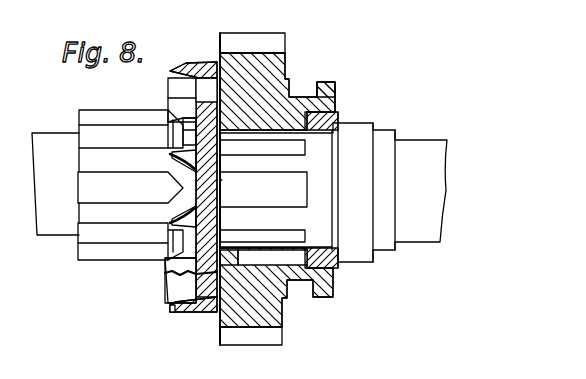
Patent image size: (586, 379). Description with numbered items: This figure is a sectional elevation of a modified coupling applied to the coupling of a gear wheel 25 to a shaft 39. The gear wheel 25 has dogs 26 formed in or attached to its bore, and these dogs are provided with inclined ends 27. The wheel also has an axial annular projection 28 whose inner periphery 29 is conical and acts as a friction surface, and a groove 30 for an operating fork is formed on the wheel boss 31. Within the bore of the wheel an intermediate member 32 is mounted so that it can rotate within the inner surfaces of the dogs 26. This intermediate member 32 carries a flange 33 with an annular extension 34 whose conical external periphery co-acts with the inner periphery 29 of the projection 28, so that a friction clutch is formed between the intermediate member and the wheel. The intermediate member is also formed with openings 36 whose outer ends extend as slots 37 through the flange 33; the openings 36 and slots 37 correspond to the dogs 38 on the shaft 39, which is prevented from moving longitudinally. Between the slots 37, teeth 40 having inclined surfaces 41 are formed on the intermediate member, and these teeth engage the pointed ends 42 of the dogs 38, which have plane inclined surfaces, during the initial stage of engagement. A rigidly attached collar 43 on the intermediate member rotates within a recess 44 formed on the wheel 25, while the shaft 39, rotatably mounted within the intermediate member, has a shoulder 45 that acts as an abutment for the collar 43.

The gear wheel 25 is at (272, 82).
The dogs 26 is at (284, 266).
The inclined ends 27 is at (232, 257).
The axial annular projection 28 is at (194, 65).
The inner periphery 29 is at (193, 77).
The groove 30 is at (322, 90).
The wheel boss 31 is at (337, 105).
The intermediate member 32 is at (262, 191).
The flange 33 is at (193, 287).
The annular extension 34 is at (173, 313).
The openings 36 is at (279, 196).
The slots 37 is at (240, 189).
The dogs 38 is at (92, 252).
The shaft 39 is at (57, 213).
The teeth 40 is at (130, 150).
The inclined surfaces 41 is at (180, 158).
The pointed ends 42 is at (180, 187).
The collar 43 is at (341, 121).
The recess 44 is at (339, 111).
The shoulder 45 is at (345, 262).